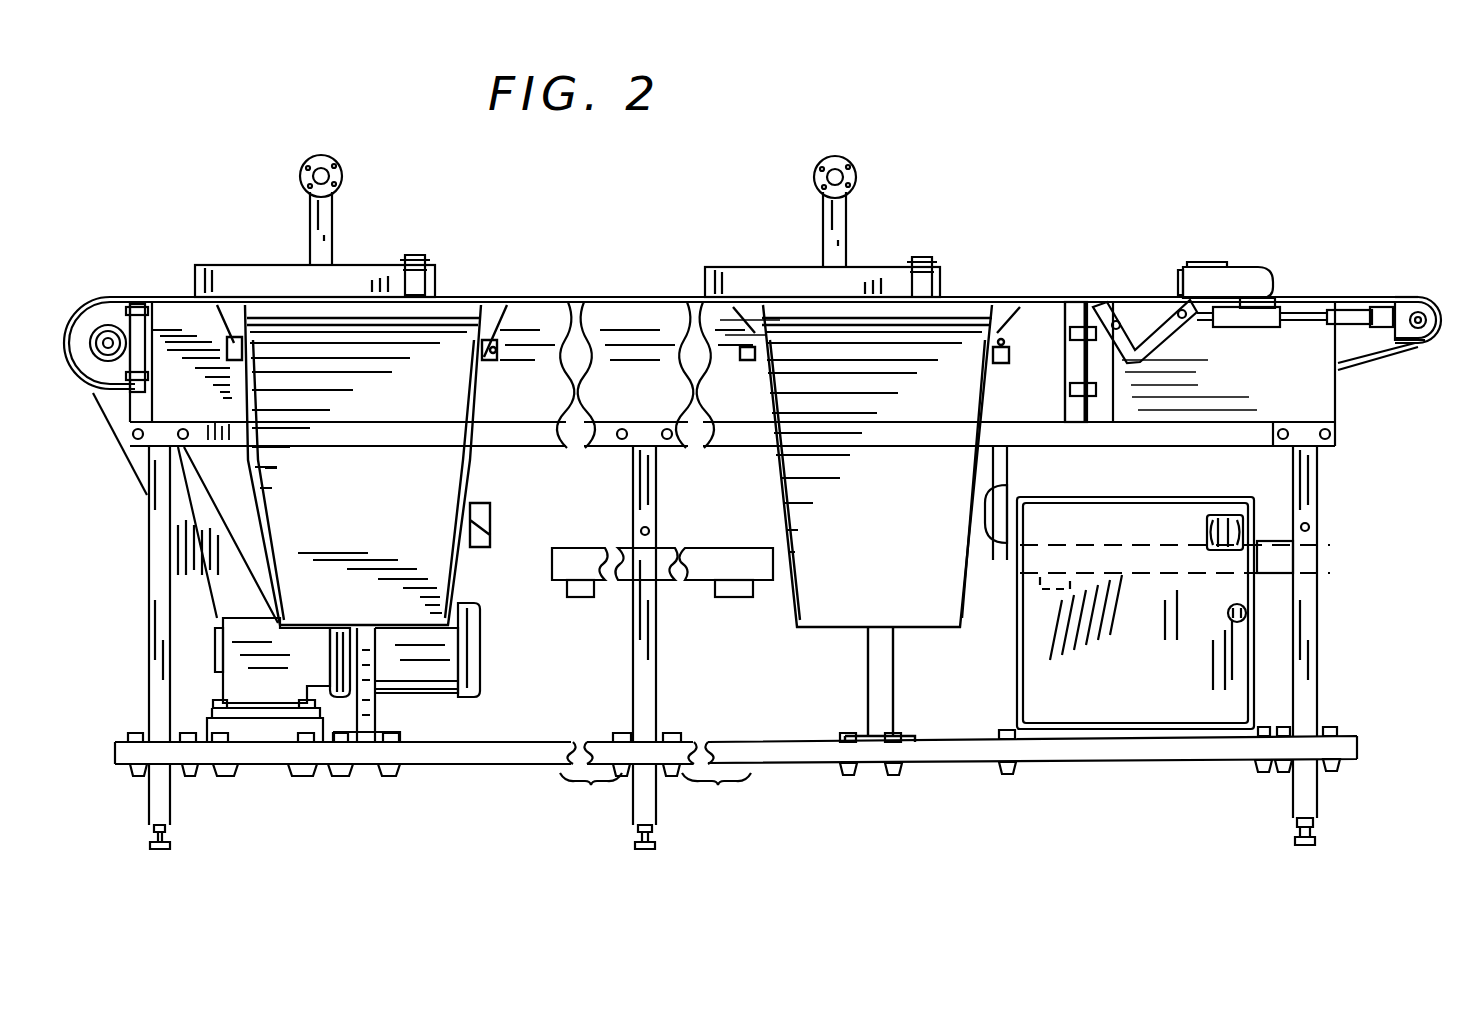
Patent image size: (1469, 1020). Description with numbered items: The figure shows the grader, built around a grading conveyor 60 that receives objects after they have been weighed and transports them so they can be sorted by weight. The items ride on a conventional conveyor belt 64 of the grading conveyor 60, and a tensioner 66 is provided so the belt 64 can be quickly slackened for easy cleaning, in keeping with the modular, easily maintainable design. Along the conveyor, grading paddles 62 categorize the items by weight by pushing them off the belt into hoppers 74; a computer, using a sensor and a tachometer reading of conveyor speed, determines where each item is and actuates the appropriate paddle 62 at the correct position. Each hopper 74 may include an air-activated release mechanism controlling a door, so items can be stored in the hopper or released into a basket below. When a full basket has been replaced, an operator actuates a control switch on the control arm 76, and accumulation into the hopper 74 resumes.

The grading conveyor 60 is at (1063, 268).
The grading paddle 62 is at (386, 268).
The conveyor belt 64 is at (1406, 260).
The tensioner 66 is at (1279, 279).
The hopper 74 is at (423, 632).
The control arm 76 is at (346, 176).